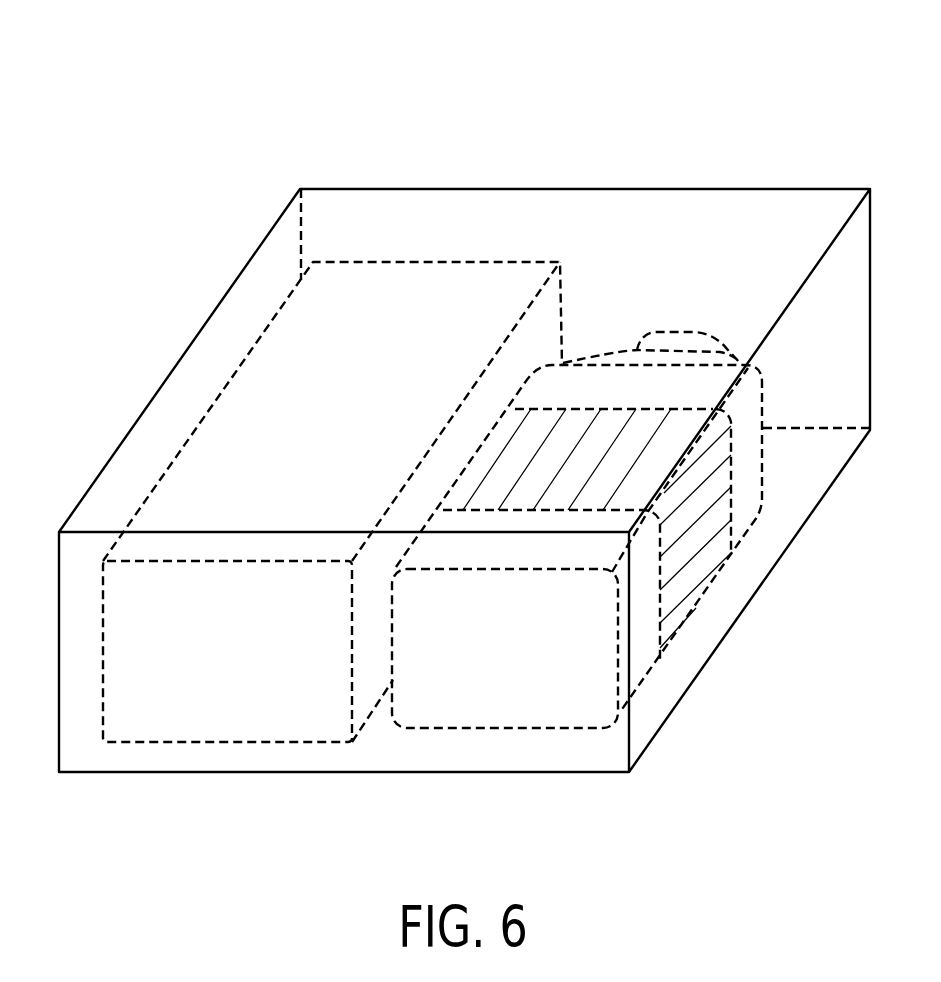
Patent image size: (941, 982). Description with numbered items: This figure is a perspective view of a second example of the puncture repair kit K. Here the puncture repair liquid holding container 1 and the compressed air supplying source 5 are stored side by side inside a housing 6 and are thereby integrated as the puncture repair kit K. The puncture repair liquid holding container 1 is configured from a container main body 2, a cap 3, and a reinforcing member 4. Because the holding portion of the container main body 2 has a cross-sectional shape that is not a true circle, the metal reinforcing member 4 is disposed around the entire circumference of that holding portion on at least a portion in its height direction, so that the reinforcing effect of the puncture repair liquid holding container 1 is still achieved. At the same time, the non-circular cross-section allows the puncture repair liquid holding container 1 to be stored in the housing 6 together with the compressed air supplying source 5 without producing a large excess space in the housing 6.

The puncture repair kit K is at (704, 138).
The puncture repair liquid holding container 1 is at (485, 730).
The container main body 2 is at (640, 672).
The cap 3 is at (705, 343).
The reinforcing member 4 is at (692, 582).
The compressed air supplying source 5 is at (203, 745).
The housing 6 is at (587, 207).